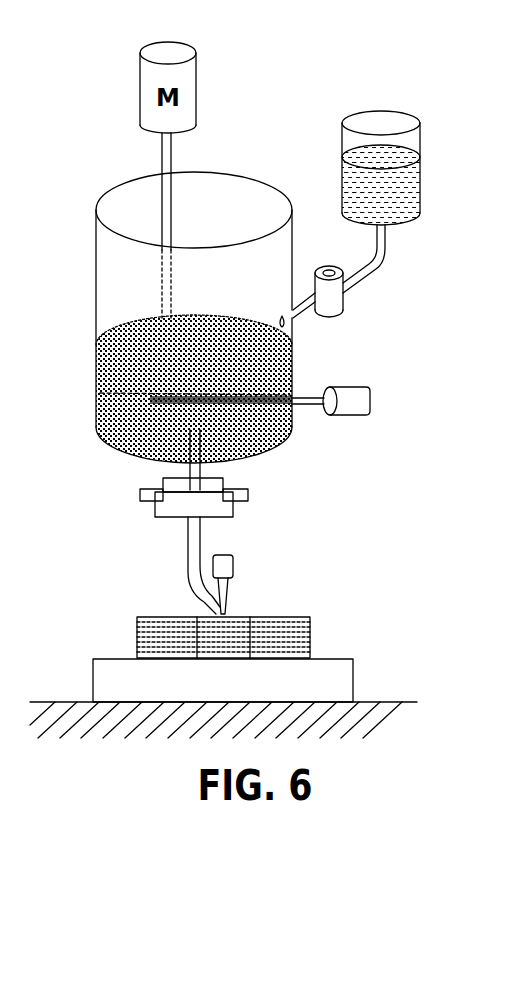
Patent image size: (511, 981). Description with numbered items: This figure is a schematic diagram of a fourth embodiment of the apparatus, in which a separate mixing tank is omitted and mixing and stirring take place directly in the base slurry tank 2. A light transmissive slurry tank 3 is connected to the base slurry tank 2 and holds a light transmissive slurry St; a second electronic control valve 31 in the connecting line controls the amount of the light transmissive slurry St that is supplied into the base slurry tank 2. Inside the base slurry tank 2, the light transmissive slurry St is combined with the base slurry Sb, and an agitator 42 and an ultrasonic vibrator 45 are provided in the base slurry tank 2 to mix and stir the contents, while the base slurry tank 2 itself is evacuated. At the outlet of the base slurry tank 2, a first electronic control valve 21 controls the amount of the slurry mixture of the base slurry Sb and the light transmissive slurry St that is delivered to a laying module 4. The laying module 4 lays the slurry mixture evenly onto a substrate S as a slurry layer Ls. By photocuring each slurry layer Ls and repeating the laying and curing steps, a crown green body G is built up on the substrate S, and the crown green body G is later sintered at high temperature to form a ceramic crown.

The agitator 42 is at (163, 205).
The base slurry tank 2 is at (96, 316).
The base slurry Sb is at (98, 392).
The light transmissive slurry tank 3 is at (421, 142).
The light transmissive slurry St is at (424, 191).
The second electronic control valve 31 is at (336, 302).
The ultrasonic vibrator 45 is at (346, 406).
The first electronic control valve 21 is at (221, 488).
The laying module 4 is at (258, 591).
The crown green body G is at (203, 612).
The slurry layer Ls is at (137, 633).
The substrate S is at (346, 680).